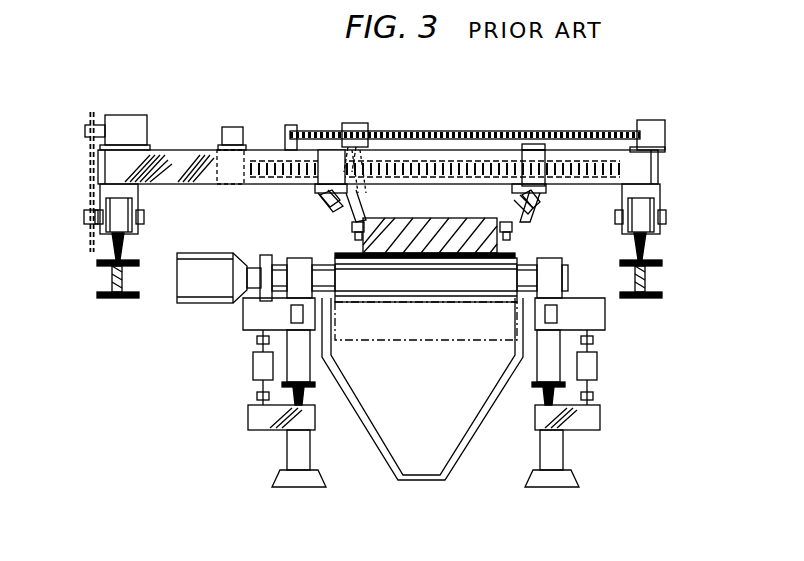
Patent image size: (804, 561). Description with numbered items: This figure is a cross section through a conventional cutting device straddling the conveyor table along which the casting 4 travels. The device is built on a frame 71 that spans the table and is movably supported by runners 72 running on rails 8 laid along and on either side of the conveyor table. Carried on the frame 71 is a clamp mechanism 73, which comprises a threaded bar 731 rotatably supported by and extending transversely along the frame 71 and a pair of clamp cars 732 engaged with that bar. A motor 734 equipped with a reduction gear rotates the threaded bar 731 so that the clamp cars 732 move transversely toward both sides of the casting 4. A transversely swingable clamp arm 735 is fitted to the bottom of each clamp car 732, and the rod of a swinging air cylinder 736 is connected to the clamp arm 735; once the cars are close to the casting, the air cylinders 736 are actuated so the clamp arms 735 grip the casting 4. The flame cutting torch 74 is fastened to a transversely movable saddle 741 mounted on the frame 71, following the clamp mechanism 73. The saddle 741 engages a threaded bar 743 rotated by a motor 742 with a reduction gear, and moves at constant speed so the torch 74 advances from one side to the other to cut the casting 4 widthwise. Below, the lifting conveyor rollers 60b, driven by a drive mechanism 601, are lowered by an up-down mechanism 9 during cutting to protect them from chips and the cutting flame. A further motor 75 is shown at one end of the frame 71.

The casting 4 is at (447, 225).
The rails 8 is at (648, 244).
The up-down mechanism 9 is at (253, 366).
The frame 71 is at (430, 150).
The runners 72 is at (673, 206).
The clamp mechanism 73 is at (531, 208).
The flame cutting torch 74 is at (364, 206).
The motor 75 is at (125, 116).
The drive mechanism 601 is at (207, 258).
The lifting conveyor rollers 60b is at (426, 299).
The threaded bar 731 is at (268, 162).
The clamp cars 732 is at (332, 150).
The motor 734 is at (232, 128).
The clamp arm 735 is at (352, 230).
The swinging air cylinder 736 is at (318, 198).
The saddle 741 is at (355, 124).
The motor 742 is at (650, 122).
The threaded bar 743 is at (534, 150).